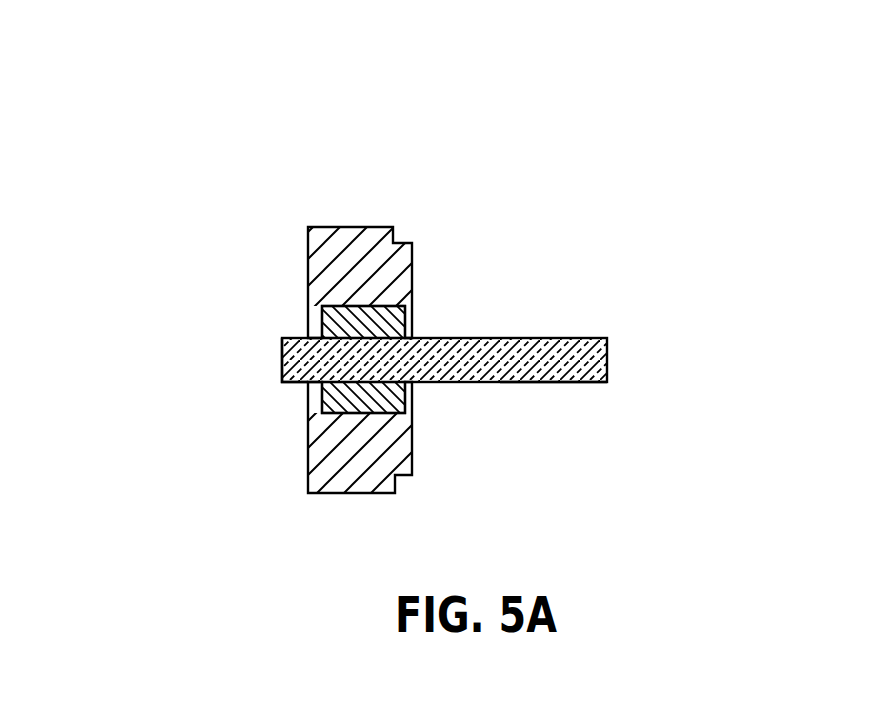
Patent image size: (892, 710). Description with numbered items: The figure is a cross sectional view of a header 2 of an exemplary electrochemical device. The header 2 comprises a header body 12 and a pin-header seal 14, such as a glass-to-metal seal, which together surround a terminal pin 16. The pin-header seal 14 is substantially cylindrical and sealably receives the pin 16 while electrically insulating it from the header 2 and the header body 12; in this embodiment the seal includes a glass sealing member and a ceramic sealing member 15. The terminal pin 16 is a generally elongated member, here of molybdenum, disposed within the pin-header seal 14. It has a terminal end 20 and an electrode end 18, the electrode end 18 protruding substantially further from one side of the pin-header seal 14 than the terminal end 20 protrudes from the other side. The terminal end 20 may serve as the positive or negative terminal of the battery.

The header 2 is at (150, 80).
The header body 12 is at (418, 222).
The pin-header seal 14 is at (435, 307).
The ceramic sealing member 15 is at (431, 417).
The terminal pin 16 is at (571, 403).
The electrode end 18 is at (600, 319).
The terminal end 20 is at (247, 418).